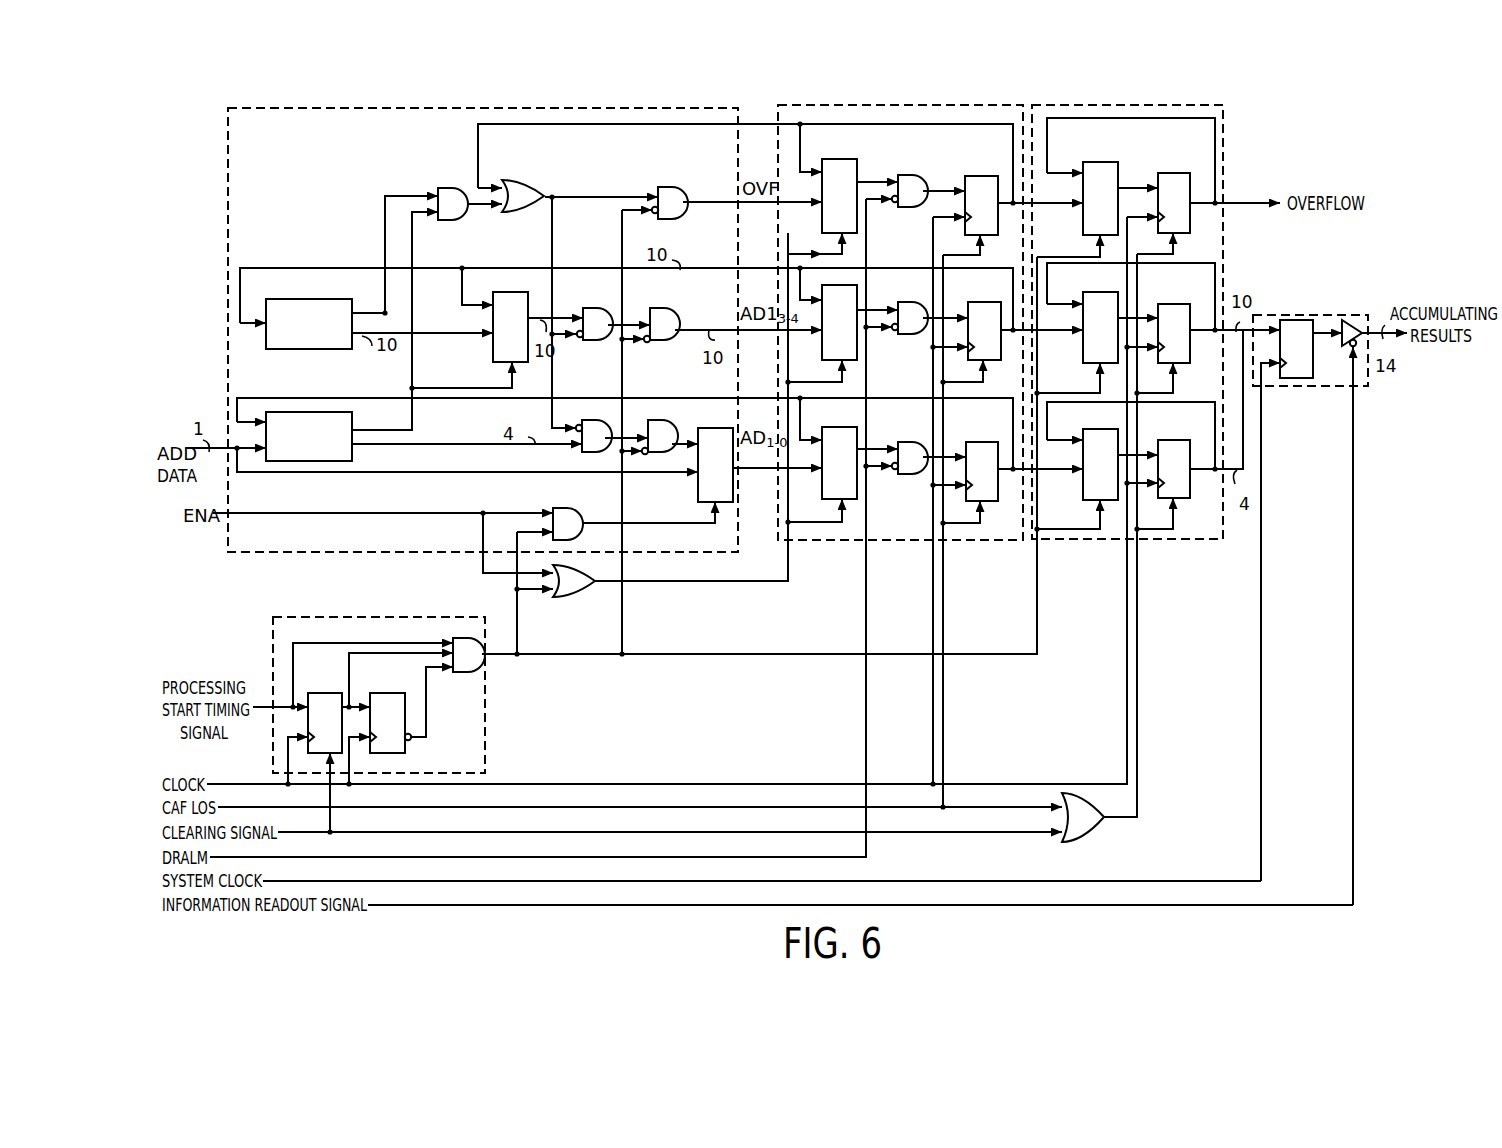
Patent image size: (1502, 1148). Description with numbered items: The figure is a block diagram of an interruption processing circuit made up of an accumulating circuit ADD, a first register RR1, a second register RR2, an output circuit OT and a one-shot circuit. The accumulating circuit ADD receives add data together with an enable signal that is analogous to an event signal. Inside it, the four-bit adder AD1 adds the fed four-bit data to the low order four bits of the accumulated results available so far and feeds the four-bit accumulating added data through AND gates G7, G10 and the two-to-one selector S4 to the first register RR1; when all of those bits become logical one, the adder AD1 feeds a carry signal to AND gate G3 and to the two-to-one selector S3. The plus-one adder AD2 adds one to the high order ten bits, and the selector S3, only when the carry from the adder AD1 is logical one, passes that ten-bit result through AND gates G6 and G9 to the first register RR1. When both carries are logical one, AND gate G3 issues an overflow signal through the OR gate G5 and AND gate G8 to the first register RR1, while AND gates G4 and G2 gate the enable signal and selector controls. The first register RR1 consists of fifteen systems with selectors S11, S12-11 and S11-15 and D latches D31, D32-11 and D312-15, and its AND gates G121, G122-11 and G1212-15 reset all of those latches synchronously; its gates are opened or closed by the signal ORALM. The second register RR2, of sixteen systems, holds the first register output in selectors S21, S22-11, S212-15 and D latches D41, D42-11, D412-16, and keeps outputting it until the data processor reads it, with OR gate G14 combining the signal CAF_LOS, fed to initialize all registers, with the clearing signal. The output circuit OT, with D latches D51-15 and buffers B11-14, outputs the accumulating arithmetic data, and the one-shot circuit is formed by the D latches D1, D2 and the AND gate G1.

The accumulating circuit ADD is at (302, 552).
The first register RR1 is at (1010, 540).
The second register RR2 is at (1155, 539).
The output circuit OT is at (1333, 386).
The 4-bit adder AD1 is at (304, 412).
The +1 adder AD2 is at (304, 298).
The 2TO1 selector S3 is at (503, 292).
The 2TO1 selector S4 is at (705, 428).
The selector S11 is at (833, 159).
The selectors S12-11 is at (833, 285).
The selectors S11-15 is at (828, 427).
The selector S21 is at (1100, 162).
The selectors S22-11 is at (1110, 292).
The selectors S212-15 is at (1110, 429).
The D latch D31 is at (975, 176).
The D latches D32-11 is at (998, 302).
The D latches D312-15 is at (980, 442).
The D latch D41 is at (1172, 173).
The D latches D42-11 is at (1172, 304).
The D latches D412-16 is at (1172, 440).
The D latches D51-15 is at (1296, 320).
The buffers B11-14 is at (1353, 322).
The D latch D1 is at (318, 693).
The D latch D2 is at (382, 693).
The AND gate G1 is at (468, 674).
The OR gate G2 is at (575, 602).
The AND gate G3 is at (451, 188).
The AND gate G4 is at (562, 508).
The OR gate G5 is at (520, 181).
The AND gate G6 is at (590, 308).
The AND gate G7 is at (588, 420).
The AND gate G8 is at (670, 187).
The AND gate G9 is at (658, 308).
The AND gate G10 is at (655, 420).
The OR gate G14 is at (1086, 842).
The AND gate G121 is at (905, 175).
The AND gates G122-11 is at (908, 335).
The AND gates G1212-15 is at (908, 473).